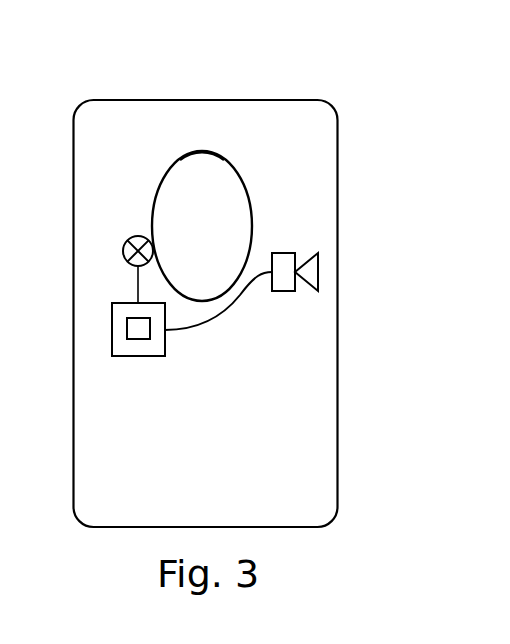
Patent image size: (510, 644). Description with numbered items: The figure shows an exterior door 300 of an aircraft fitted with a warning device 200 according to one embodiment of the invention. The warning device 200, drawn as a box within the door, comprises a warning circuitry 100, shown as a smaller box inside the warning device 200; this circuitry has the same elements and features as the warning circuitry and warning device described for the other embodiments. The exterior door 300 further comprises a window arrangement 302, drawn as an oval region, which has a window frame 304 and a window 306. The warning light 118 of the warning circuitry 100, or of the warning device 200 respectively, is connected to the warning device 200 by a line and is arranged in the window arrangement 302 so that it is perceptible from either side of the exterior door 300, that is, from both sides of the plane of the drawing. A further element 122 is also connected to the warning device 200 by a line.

The exterior door 300 is at (325, 92).
The window arrangement 302 is at (244, 181).
The window frame 304 is at (202, 152).
The interior area 306 is at (185, 170).
The warning light 118 is at (140, 236).
The camera 122 is at (284, 253).
The warning device 200 is at (166, 345).
The warning circuitry 100 is at (141, 340).